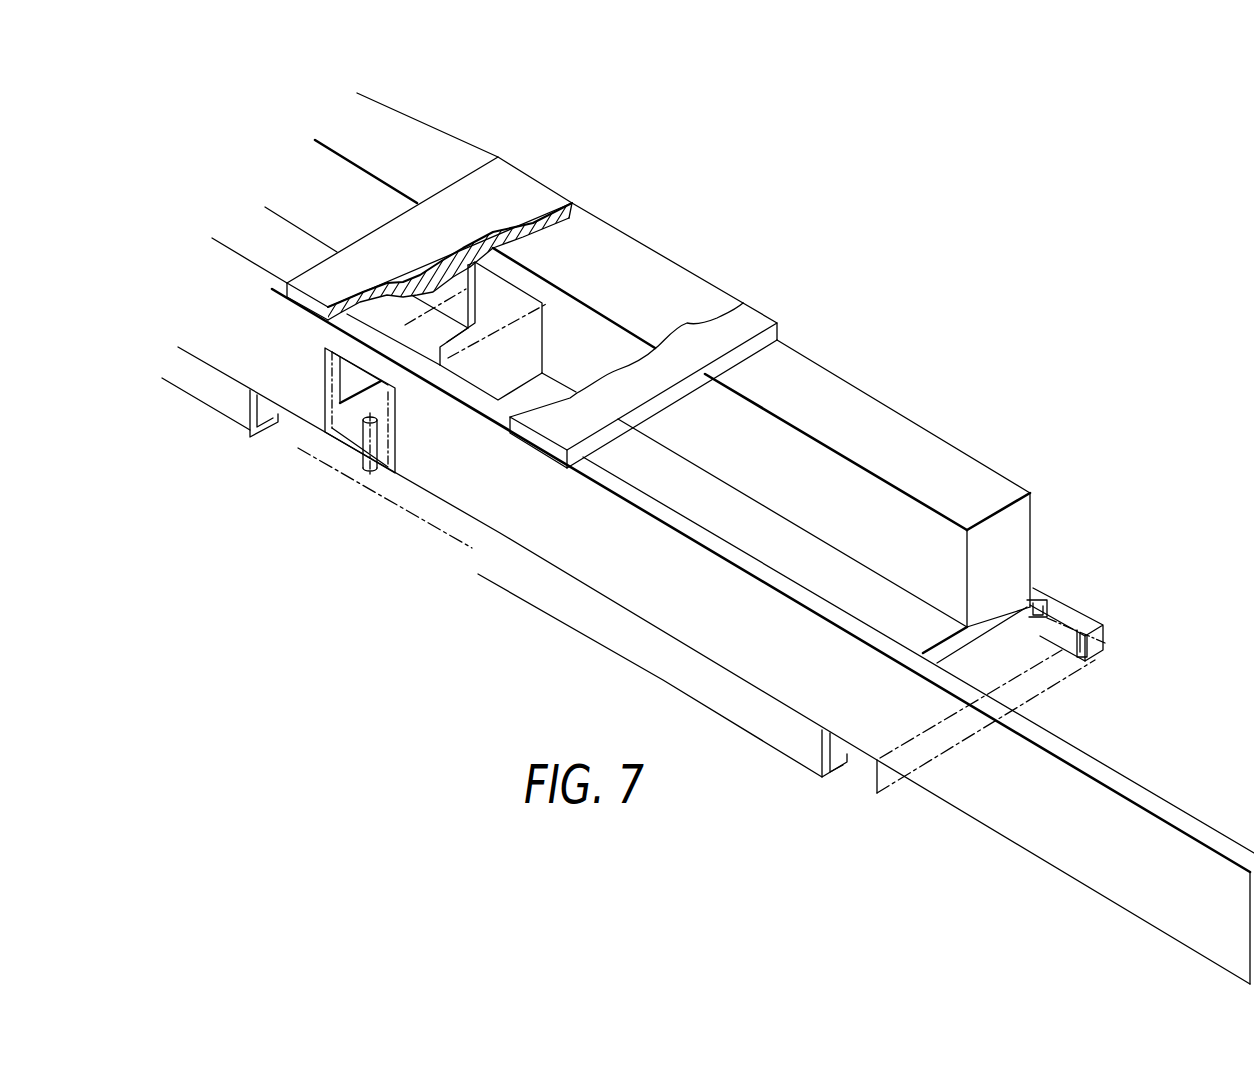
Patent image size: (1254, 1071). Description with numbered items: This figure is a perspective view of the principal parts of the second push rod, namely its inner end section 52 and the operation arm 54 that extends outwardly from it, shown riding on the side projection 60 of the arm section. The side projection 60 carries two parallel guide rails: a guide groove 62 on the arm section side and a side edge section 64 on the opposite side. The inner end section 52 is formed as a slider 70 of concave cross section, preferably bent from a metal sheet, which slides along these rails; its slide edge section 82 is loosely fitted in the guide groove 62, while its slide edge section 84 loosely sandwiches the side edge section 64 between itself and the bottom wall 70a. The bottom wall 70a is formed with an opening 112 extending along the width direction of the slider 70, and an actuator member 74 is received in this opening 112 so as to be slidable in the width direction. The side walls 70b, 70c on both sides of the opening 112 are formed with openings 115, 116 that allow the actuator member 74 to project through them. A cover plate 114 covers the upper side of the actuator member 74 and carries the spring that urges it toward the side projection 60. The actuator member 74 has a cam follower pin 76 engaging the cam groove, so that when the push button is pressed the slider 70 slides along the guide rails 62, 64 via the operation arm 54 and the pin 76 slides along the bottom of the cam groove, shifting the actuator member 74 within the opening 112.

The inner end section 52 is at (973, 404).
The operation arm 54 is at (1157, 803).
The side projection 60 is at (424, 538).
The guide groove 62 is at (1107, 657).
The side edge section 64 is at (862, 773).
The slider 70 is at (645, 612).
The bottom wall 70a is at (702, 490).
The side wall 70b is at (558, 557).
The side wall 70c is at (853, 480).
The actuator member 74 is at (506, 314).
The cam follower pin 76 is at (363, 440).
The slide edge section 82 is at (1040, 600).
The slide edge section 84 is at (233, 413).
The opening 112 is at (517, 387).
The cover plate 114 is at (757, 323).
The opening 115 is at (322, 370).
The opening 116 is at (483, 300).